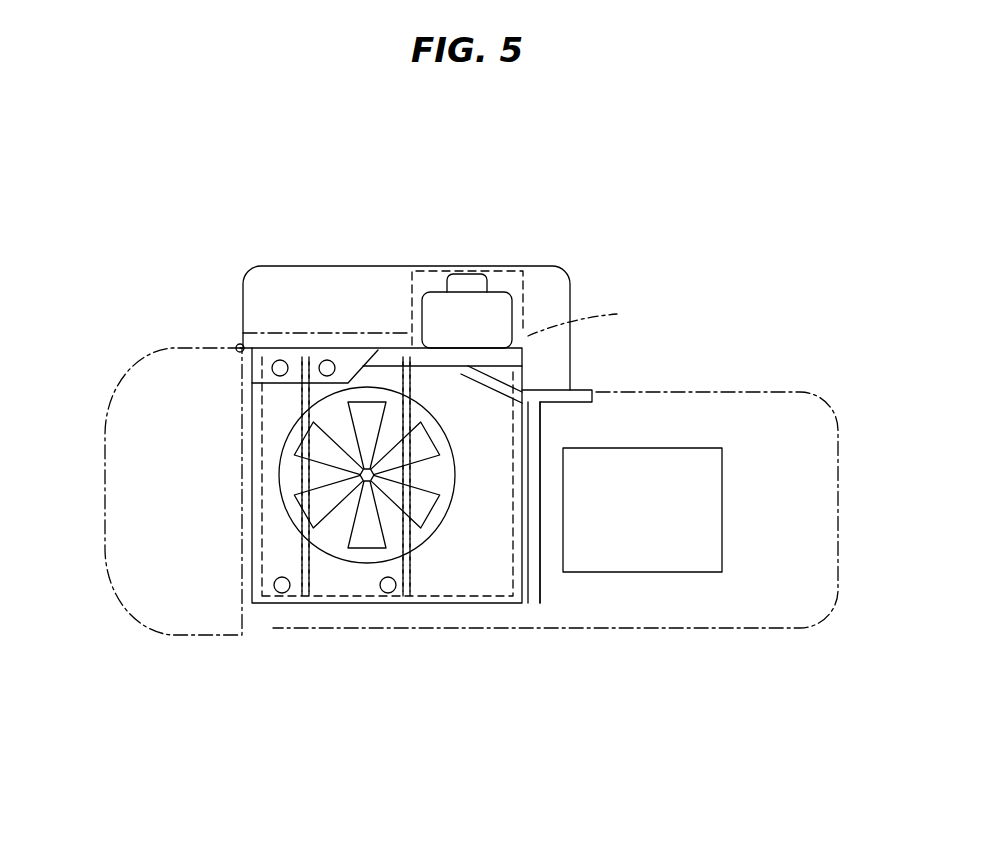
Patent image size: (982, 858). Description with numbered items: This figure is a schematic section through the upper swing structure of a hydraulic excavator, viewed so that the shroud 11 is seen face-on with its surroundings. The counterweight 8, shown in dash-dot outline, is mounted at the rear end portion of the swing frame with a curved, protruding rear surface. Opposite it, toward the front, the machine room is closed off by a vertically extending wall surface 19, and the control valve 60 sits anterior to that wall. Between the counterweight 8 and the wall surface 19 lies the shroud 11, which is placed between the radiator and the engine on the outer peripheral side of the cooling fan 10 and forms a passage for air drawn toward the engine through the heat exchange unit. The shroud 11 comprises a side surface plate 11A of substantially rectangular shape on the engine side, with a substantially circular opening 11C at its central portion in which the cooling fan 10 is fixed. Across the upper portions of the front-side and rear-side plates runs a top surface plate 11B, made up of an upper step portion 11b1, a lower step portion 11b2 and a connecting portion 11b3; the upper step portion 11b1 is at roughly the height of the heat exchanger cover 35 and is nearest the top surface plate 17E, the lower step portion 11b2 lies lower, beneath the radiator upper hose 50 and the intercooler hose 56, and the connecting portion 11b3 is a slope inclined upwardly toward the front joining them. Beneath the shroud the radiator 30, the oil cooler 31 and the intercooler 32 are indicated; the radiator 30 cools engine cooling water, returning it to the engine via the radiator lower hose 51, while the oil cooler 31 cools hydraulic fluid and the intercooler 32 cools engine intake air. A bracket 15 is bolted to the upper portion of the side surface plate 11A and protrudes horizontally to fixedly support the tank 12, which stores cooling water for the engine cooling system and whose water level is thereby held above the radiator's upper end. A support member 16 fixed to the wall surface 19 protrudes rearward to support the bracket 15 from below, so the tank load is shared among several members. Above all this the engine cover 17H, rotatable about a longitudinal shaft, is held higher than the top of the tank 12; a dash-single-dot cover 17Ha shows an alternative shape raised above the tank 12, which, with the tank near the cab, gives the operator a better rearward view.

The counterweight 8 is at (122, 392).
The cooling fan 10 is at (369, 535).
The shroud 11 is at (248, 443).
The side surface plate 11A is at (483, 448).
The top surface plate 11B is at (445, 197).
The upper step portion 11b1 is at (403, 362).
The lower step portion 11b2 is at (293, 362).
The connecting portion 11b3 is at (364, 352).
The opening 11C is at (292, 479).
The tank 12 is at (495, 277).
The bracket 15 is at (500, 348).
The support member 16 is at (527, 391).
The top surface plate 17E is at (775, 392).
The engine cover 17H is at (555, 268).
The cover 17Ha is at (456, 320).
The wall surface 19 is at (542, 588).
The radiator 30 is at (327, 606).
The oil cooler 31 is at (477, 606).
The intercooler 32 is at (277, 606).
The heat exchanger cover 35 is at (350, 350).
The radiator upper hose 50 is at (326, 359).
The radiator lower hose 51 is at (393, 593).
The intercooler hose 56 is at (281, 359).
The control valve 60 is at (722, 487).